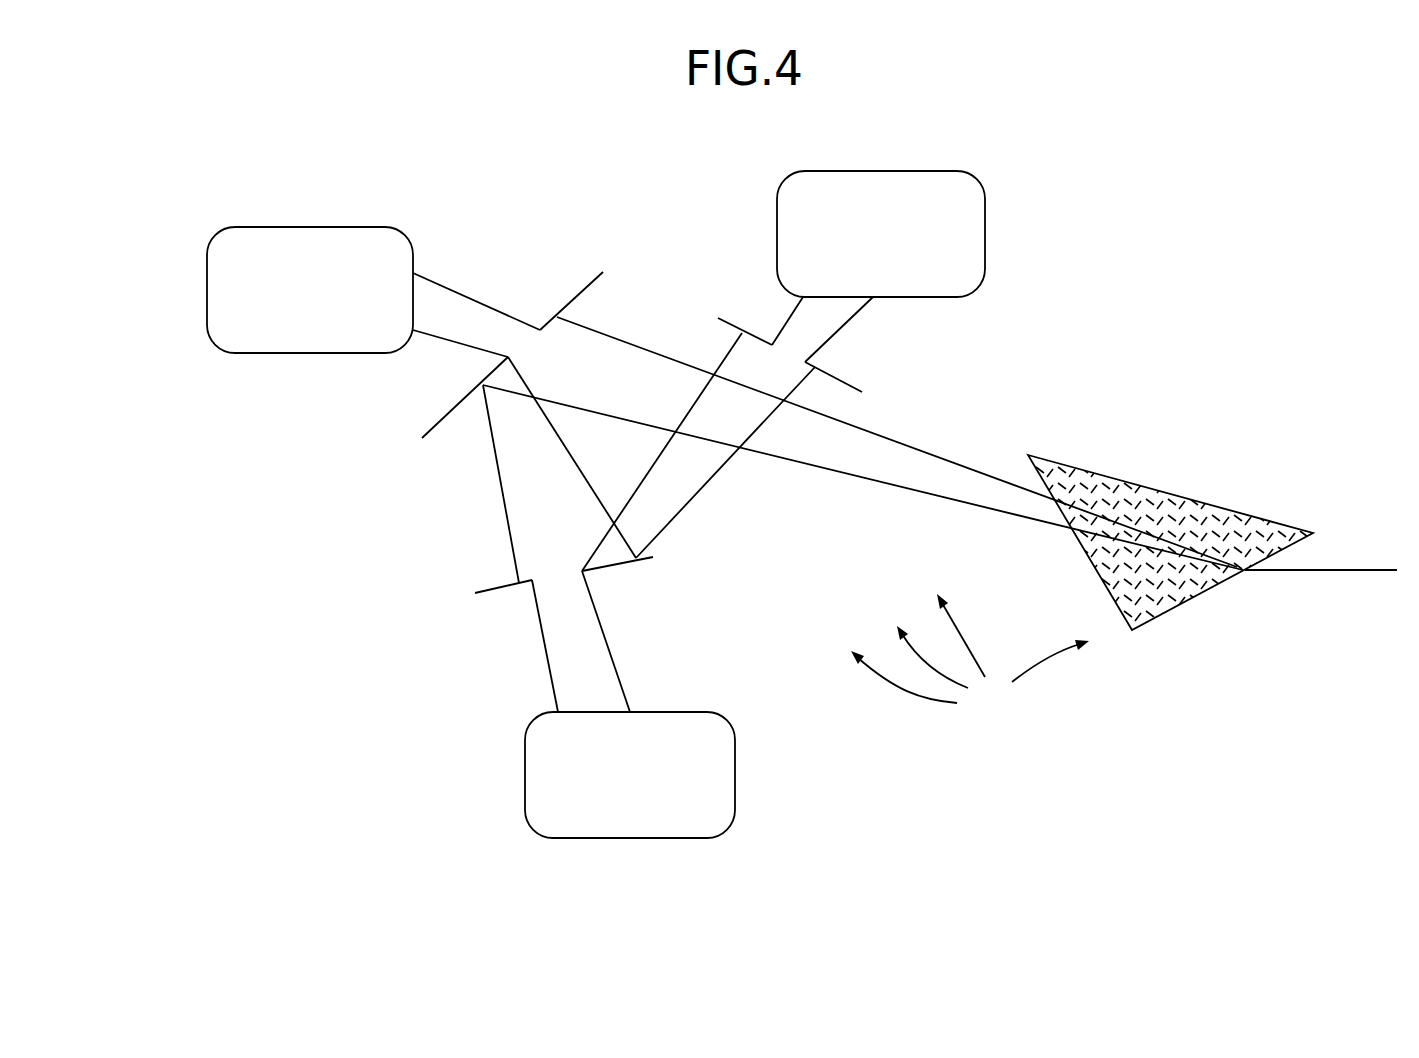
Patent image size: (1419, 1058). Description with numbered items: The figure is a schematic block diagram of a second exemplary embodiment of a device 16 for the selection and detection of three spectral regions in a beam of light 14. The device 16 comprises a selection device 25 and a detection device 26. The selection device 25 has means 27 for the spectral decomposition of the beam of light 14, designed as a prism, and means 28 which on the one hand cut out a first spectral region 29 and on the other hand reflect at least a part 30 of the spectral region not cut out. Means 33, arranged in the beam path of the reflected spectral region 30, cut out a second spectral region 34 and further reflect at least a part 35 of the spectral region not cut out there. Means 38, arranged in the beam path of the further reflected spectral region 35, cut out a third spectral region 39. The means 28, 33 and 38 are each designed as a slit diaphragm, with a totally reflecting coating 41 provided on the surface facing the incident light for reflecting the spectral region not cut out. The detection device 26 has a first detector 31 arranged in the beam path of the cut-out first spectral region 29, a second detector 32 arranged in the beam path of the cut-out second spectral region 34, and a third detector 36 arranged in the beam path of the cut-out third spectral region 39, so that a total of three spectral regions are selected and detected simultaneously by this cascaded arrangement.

The beam of light 14 is at (1348, 567).
The device 16 is at (1022, 177).
The selection device 25 is at (970, 656).
The detection device 26 is at (178, 268).
The means for spectral decomposition 27 is at (1185, 500).
The means for cutting out a first spectral region 28 is at (582, 293).
The first spectral region 29 is at (467, 313).
The reflected spectral region 30 is at (522, 455).
The first detector 31 is at (293, 257).
The second detector 32 is at (687, 765).
The means for cutting out a second spectral region 33 is at (500, 588).
The second spectral region 34 is at (582, 638).
The further reflected spectral region 35 is at (667, 492).
The third detector 36 is at (922, 252).
The means for cutting out a third spectral region 38 is at (862, 392).
The third spectral region 39 is at (827, 323).
The totally reflecting coating 41 is at (460, 410).